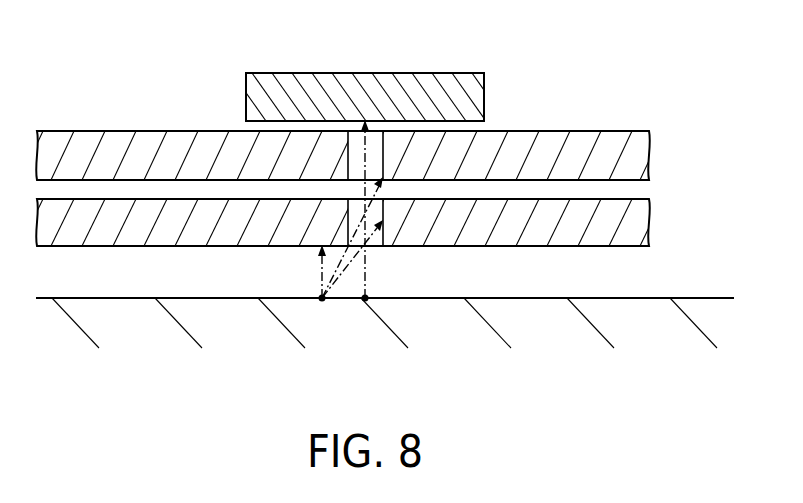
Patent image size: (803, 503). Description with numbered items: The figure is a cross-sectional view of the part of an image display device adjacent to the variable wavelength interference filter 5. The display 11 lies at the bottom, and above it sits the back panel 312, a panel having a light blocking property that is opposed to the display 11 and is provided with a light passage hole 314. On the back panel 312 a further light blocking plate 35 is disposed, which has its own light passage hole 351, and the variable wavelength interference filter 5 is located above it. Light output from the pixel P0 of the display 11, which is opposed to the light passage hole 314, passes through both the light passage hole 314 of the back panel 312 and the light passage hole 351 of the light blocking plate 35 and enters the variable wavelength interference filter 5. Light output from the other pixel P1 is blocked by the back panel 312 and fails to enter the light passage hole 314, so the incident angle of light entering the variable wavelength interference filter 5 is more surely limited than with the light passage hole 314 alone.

The variable wavelength interference filter 5 is at (457, 73).
The light blocking plate 35 is at (650, 155).
The back panel 312 is at (650, 222).
The light passage hole 314 is at (356, 210).
The light passage hole 351 is at (374, 138).
The display 11 is at (485, 298).
The pixel P1 is at (319, 296).
The pixel P0 is at (368, 296).